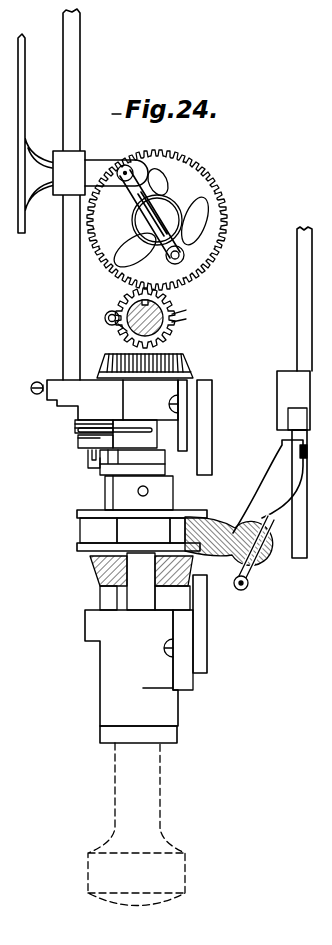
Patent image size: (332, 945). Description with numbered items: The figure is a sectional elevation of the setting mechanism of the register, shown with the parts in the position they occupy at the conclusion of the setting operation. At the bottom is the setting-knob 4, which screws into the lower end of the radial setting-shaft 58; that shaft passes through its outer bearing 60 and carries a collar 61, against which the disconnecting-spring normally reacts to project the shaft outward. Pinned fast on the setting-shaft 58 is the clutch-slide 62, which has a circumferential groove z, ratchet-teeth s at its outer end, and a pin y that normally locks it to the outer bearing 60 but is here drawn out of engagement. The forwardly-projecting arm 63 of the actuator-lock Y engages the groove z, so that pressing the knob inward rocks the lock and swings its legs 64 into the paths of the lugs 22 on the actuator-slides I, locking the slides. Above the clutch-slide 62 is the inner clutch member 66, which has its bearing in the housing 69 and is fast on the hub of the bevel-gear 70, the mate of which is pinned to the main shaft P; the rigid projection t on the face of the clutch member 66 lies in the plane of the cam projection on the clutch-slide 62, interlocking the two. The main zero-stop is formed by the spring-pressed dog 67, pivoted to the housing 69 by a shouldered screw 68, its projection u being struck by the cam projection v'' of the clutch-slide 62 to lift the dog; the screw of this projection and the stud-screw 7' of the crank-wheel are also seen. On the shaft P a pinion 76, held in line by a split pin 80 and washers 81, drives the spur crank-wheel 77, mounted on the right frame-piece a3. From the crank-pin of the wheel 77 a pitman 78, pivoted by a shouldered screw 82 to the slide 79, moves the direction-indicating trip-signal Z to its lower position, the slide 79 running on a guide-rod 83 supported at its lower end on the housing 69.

The direction-indicating trip-signal Z is at (36, 133).
The slide 79 is at (69, 173).
The shouldered screw 82 is at (125, 167).
The guide-rod 83 is at (104, 113).
The spur crank-wheel 77 is at (165, 220).
The pitman 78 is at (142, 212).
The crank pin 7' is at (185, 243).
The pinion 76 is at (172, 313).
The split pin 80 is at (105, 321).
The washer 81 is at (126, 335).
The shaft P is at (128, 312).
The bevel-gear 70 is at (192, 376).
The housing 69 is at (150, 400).
The right frame-piece a3 is at (204, 418).
The spring-pressed dog 67 is at (80, 436).
The inner clutch member 66 is at (117, 435).
The shouldered screw 68 is at (78, 447).
The projection u is at (88, 462).
The rigid projection t is at (150, 466).
The bracket v'' is at (120, 493).
The circumferential groove z is at (98, 530).
The clutch-slide 62 is at (151, 530).
The setting-shaft 58 is at (141, 581).
The ratchet-teeth s is at (76, 577).
The pin y is at (108, 602).
The outer bearing 60 is at (139, 668).
The collar 61 is at (138, 735).
The setting-knob 4 is at (136, 824).
The actuator-slide I is at (287, 299).
The recessed lateral projection 22 is at (293, 464).
The legs 64 is at (258, 497).
The actuator-lock Y is at (245, 473).
The forwardly-projecting arm 63 is at (240, 532).